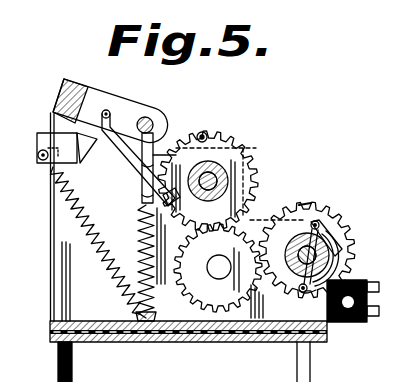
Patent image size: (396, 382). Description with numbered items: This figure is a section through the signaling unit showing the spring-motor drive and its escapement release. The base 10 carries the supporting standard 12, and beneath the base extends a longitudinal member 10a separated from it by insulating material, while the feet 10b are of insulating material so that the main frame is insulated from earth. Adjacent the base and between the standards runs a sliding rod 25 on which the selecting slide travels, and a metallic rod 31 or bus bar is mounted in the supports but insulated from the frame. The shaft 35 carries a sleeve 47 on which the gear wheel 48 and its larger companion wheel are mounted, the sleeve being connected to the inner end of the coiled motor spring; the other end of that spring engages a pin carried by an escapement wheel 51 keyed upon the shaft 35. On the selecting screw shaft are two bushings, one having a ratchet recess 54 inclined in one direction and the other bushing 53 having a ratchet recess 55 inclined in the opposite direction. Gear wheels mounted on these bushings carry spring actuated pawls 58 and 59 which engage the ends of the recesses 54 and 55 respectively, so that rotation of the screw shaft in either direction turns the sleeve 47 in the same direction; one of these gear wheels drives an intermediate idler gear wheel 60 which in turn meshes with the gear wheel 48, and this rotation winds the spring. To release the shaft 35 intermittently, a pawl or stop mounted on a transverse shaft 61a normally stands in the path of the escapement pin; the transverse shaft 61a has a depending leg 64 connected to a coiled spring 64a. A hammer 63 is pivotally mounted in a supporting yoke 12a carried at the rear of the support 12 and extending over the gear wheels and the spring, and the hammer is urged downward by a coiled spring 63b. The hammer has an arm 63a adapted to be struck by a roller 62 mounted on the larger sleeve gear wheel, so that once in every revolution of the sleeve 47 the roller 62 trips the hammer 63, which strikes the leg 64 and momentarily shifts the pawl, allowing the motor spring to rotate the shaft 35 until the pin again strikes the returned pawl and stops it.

The base 10 is at (100, 312).
The longitudinal member 10a is at (306, 360).
The feet 10b is at (72, 358).
The supporting standard 12 is at (62, 276).
The supporting yoke 12a is at (103, 93).
The sliding rod 25 is at (331, 211).
The metallic rod or bus bar 31 is at (348, 308).
The shaft 35 is at (216, 180).
The sleeve 47 is at (218, 174).
The gear wheel 48 is at (226, 136).
The escapement wheel 51 is at (306, 204).
The bushing 53 is at (344, 253).
The ratchet recess 54 is at (322, 228).
The ratchet recess 55 is at (264, 322).
The spring actuated pawl 58 is at (340, 266).
The spring actuated pawl 59 is at (338, 241).
The idler gear wheel 60 is at (209, 260).
The transverse shaft 61a is at (151, 118).
The roller 62 is at (203, 132).
The hammer 63 is at (92, 146).
The hammer arm 63a is at (134, 172).
The coiled spring 63b is at (97, 245).
The depending leg 64 is at (138, 211).
The coiled spring 64a is at (150, 314).